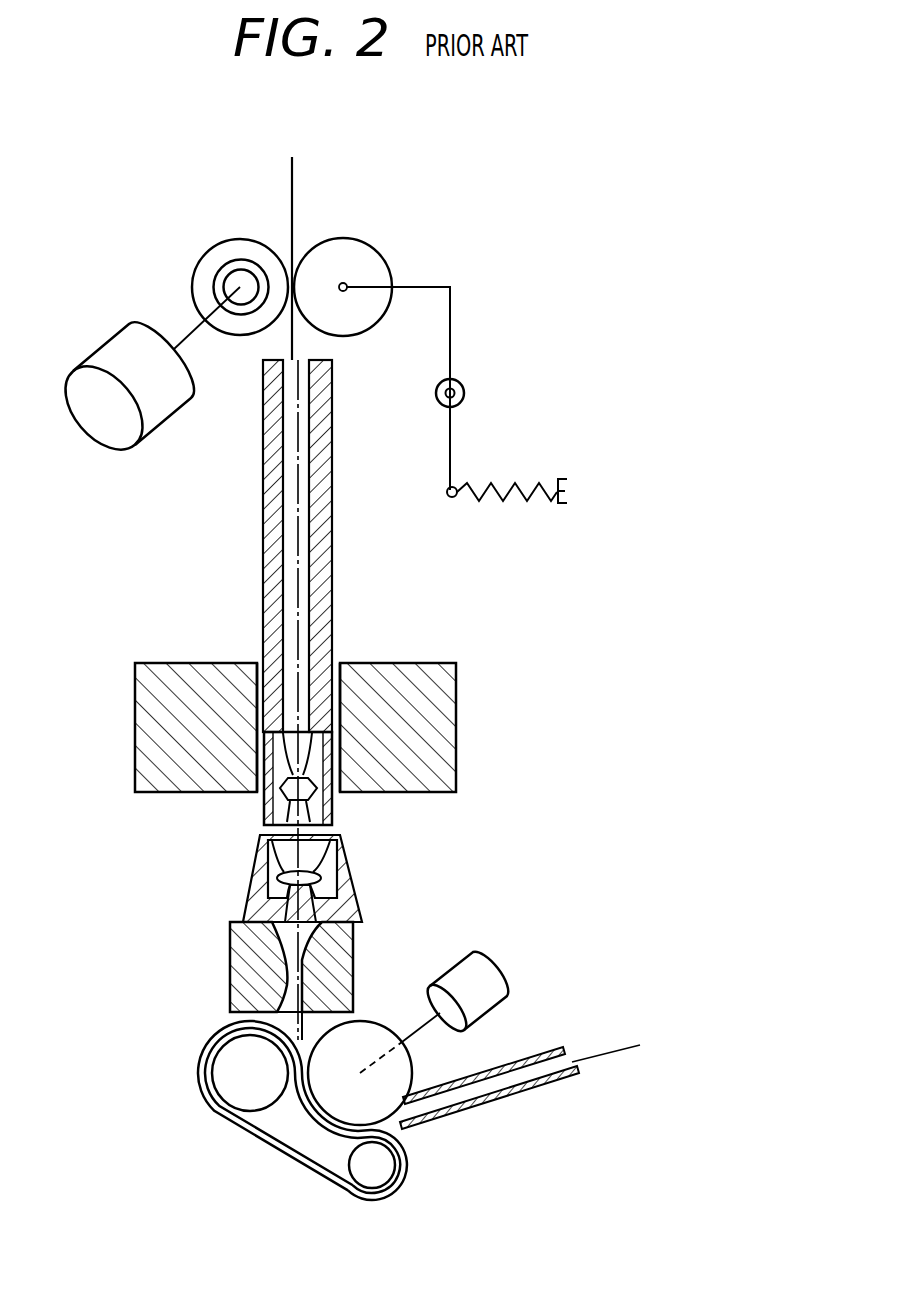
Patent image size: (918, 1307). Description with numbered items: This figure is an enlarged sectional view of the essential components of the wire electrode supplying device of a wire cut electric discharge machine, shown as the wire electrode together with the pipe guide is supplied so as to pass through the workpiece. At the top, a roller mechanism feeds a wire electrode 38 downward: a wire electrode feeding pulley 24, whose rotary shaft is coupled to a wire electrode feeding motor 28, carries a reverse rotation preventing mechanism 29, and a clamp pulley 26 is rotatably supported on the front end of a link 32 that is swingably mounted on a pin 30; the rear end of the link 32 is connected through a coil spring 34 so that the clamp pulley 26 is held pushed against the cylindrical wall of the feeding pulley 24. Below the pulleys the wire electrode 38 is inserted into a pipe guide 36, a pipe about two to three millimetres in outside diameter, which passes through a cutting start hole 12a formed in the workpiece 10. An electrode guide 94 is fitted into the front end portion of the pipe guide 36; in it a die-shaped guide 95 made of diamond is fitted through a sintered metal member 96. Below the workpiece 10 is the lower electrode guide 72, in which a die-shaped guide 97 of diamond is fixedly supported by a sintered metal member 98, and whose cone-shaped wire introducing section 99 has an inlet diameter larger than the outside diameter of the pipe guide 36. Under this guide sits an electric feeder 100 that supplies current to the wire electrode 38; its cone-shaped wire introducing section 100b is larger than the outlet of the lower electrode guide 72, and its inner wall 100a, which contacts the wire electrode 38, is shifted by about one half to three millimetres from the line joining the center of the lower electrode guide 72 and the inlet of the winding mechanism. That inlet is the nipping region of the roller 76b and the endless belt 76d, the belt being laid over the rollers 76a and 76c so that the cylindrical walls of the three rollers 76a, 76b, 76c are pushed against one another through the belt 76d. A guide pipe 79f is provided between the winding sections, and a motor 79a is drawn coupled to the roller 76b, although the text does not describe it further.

The workpiece 10 is at (457, 690).
The cutting start hole 12a is at (341, 663).
The wire electrode feeding pulley 24 is at (197, 263).
The clamp pulley 26 is at (358, 232).
The wire electrode feeding motor 28 is at (98, 342).
The reverse rotation preventing mechanism 29 is at (242, 258).
The pin 30 is at (436, 393).
The link 32 is at (466, 287).
The coil spring 34 is at (510, 483).
The pipe guide 36 is at (333, 562).
The wire electrode 38 is at (287, 1013).
The lower electrode guide 72 is at (357, 910).
The roller 76a is at (222, 1075).
The roller 76b is at (412, 1067).
The roller 76c is at (373, 1177).
The endless belt 76d is at (272, 1150).
The motor 79a is at (510, 960).
The guide pipe 79f is at (498, 1107).
The electrode guide 94 is at (267, 795).
The die-shaped guide 95 is at (290, 802).
The sintered metal member 96 is at (317, 813).
The die-shaped guide 97 is at (267, 897).
The sintered metal member 98 is at (277, 860).
The wire introducing section 99 is at (340, 858).
The electric feeder 100 is at (295, 963).
The inner wall 100a is at (307, 982).
The wire introducing section 100b is at (327, 957).